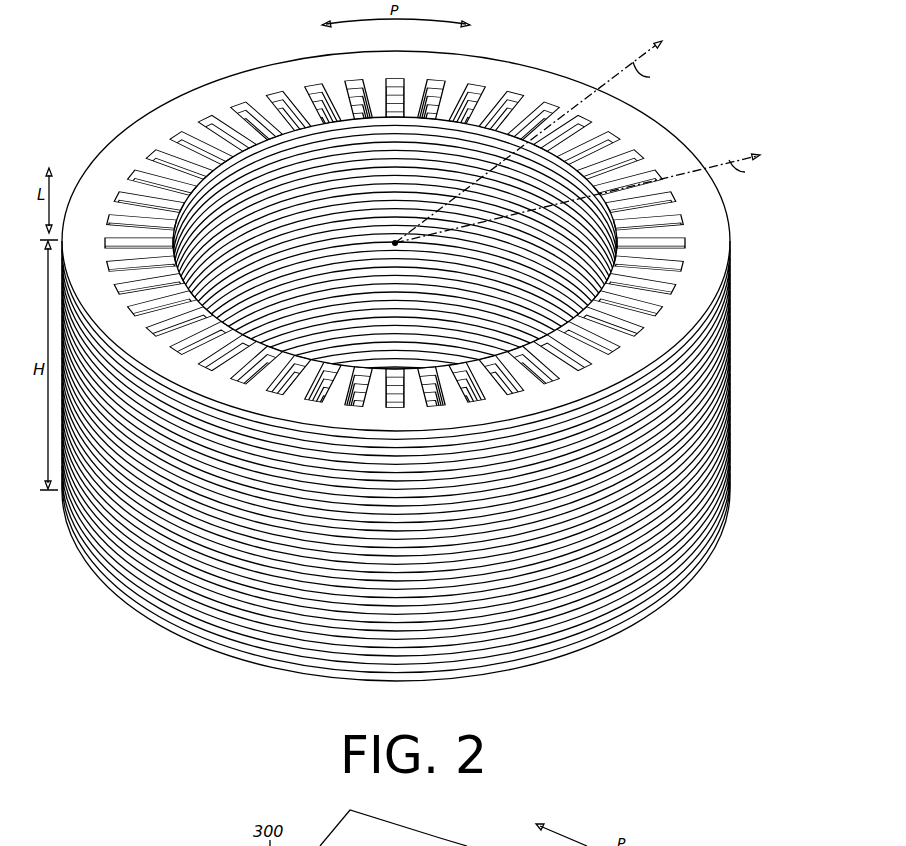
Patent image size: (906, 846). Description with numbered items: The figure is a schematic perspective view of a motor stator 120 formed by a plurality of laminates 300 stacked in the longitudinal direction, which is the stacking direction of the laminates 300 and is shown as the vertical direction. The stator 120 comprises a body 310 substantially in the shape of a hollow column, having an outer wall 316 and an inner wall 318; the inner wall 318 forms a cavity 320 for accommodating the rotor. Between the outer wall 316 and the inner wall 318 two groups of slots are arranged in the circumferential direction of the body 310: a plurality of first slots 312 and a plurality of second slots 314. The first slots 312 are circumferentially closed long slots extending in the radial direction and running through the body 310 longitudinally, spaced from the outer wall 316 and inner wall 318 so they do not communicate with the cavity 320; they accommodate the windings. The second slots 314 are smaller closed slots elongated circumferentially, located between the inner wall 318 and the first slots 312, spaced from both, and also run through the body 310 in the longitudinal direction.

The stator 120 is at (535, 50).
The laminates 300 is at (697, 337).
The body 310 is at (736, 320).
The first slots 312 is at (330, 100).
The second slots 314 is at (303, 117).
The outer wall 316 is at (202, 87).
The inner wall 318 is at (247, 218).
The cavity 320 is at (458, 177).